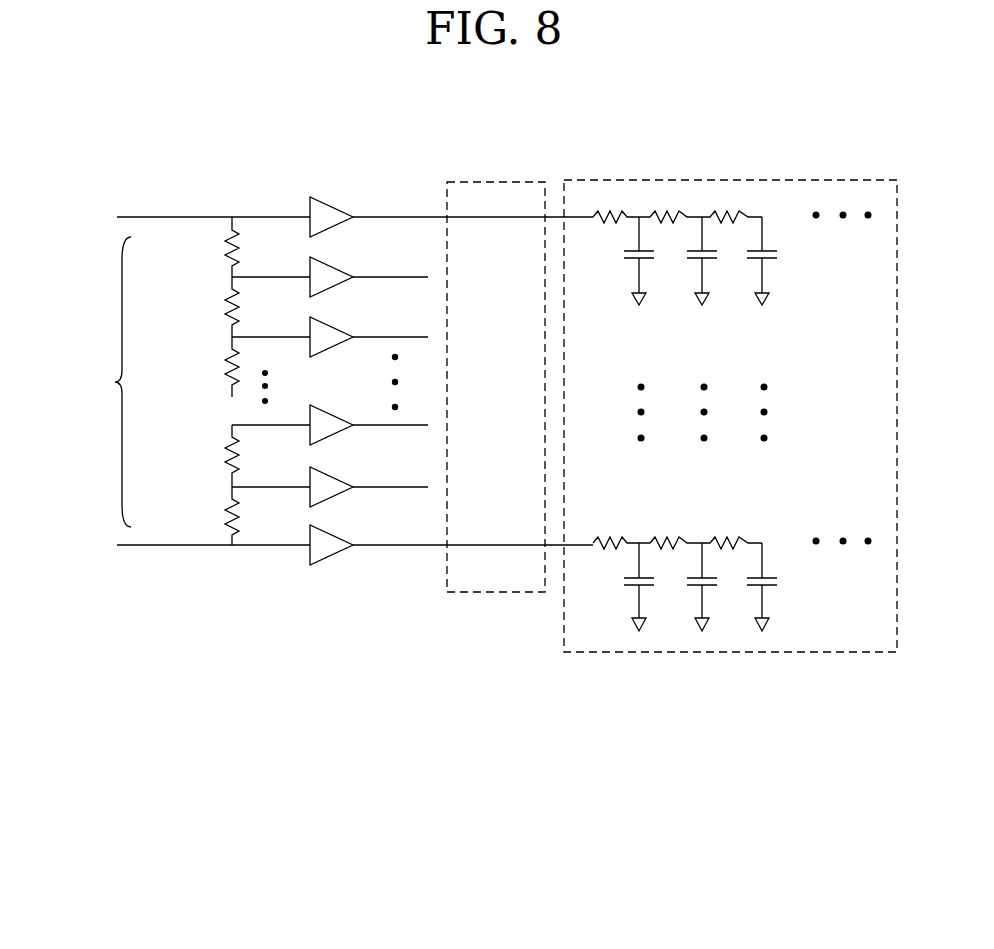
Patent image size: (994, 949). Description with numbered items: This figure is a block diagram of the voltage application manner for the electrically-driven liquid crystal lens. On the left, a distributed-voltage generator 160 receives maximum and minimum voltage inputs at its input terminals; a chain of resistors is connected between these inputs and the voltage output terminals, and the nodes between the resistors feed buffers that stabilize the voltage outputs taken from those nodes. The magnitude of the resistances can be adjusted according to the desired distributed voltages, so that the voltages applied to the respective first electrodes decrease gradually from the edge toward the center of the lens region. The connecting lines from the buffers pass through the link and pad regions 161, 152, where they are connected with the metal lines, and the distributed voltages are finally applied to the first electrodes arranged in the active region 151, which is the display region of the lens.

The distributed-voltage generator 160 is at (413, 568).
The link 161 is at (479, 495).
The pad region 152 is at (496, 592).
The active region 151 is at (733, 652).